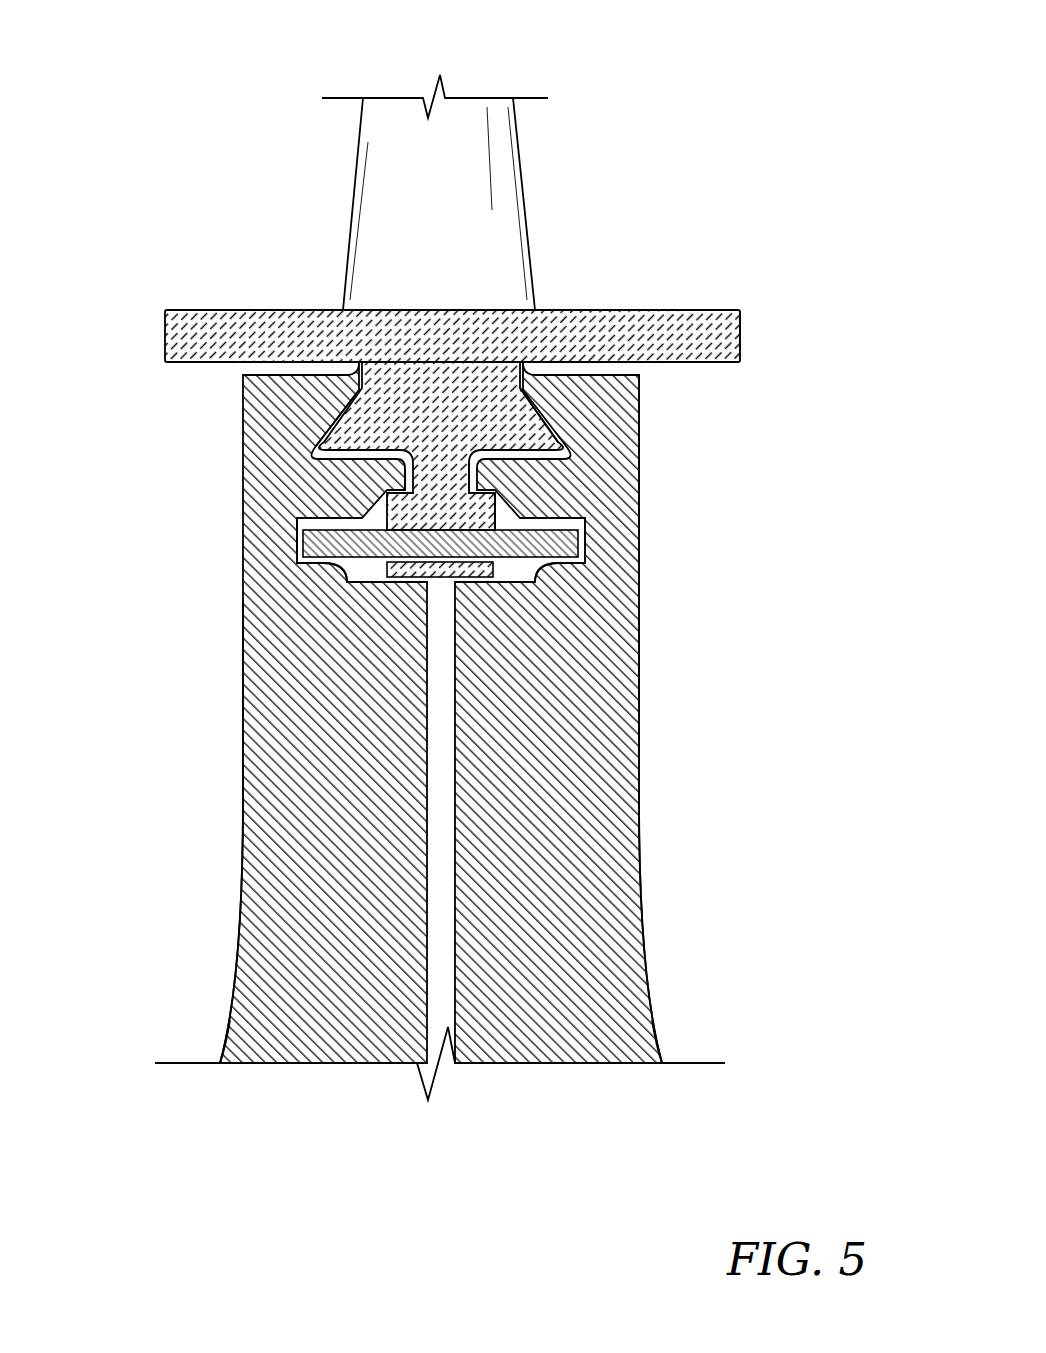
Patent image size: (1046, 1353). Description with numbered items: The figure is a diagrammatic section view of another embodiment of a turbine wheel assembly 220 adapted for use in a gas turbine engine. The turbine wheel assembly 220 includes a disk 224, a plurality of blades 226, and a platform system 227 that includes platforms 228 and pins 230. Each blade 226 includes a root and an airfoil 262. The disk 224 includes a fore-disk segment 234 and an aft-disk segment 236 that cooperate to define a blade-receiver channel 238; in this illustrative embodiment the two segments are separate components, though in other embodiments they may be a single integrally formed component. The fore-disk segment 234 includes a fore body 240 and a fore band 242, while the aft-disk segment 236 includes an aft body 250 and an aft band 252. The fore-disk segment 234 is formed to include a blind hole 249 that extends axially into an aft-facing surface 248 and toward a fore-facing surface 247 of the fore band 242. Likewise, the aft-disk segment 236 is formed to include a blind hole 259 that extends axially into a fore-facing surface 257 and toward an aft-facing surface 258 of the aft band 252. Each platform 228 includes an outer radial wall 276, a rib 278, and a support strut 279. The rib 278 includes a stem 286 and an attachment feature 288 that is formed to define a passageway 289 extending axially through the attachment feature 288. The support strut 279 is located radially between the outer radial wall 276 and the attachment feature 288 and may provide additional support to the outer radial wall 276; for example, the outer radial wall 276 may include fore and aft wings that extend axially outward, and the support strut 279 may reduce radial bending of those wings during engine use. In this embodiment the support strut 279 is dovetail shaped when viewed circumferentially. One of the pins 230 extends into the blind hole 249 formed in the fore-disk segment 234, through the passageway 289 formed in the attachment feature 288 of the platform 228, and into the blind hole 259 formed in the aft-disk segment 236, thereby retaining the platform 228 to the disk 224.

The turbine wheel assembly 220 is at (456, 276).
The blade 226 is at (465, 178).
The airfoil 262 is at (522, 232).
The platform system 227 is at (413, 348).
The platform 228 is at (499, 290).
The outer radial wall 276 is at (745, 340).
The aft-facing surface 258 is at (640, 393).
The fore-facing surface 257 is at (550, 417).
The stem 286 is at (486, 482).
The attachment feature 288 is at (484, 521).
The blind hole 259 is at (585, 544).
The aft band 252 is at (648, 547).
The pin 230 is at (535, 560).
The blade-receiver channel 238 is at (511, 562).
The fore band 242 is at (240, 557).
The fore-facing surface 247 is at (242, 405).
The support strut 279 is at (345, 394).
The aft-facing surface 248 is at (333, 432).
The rib 278 is at (397, 488).
The blind hole 249 is at (310, 565).
The passageway 289 is at (408, 567).
The disk 224 is at (233, 937).
The fore-disk segment 234 is at (238, 880).
The fore body 240 is at (223, 972).
The aft-disk segment 236 is at (647, 911).
The aft body 250 is at (653, 991).